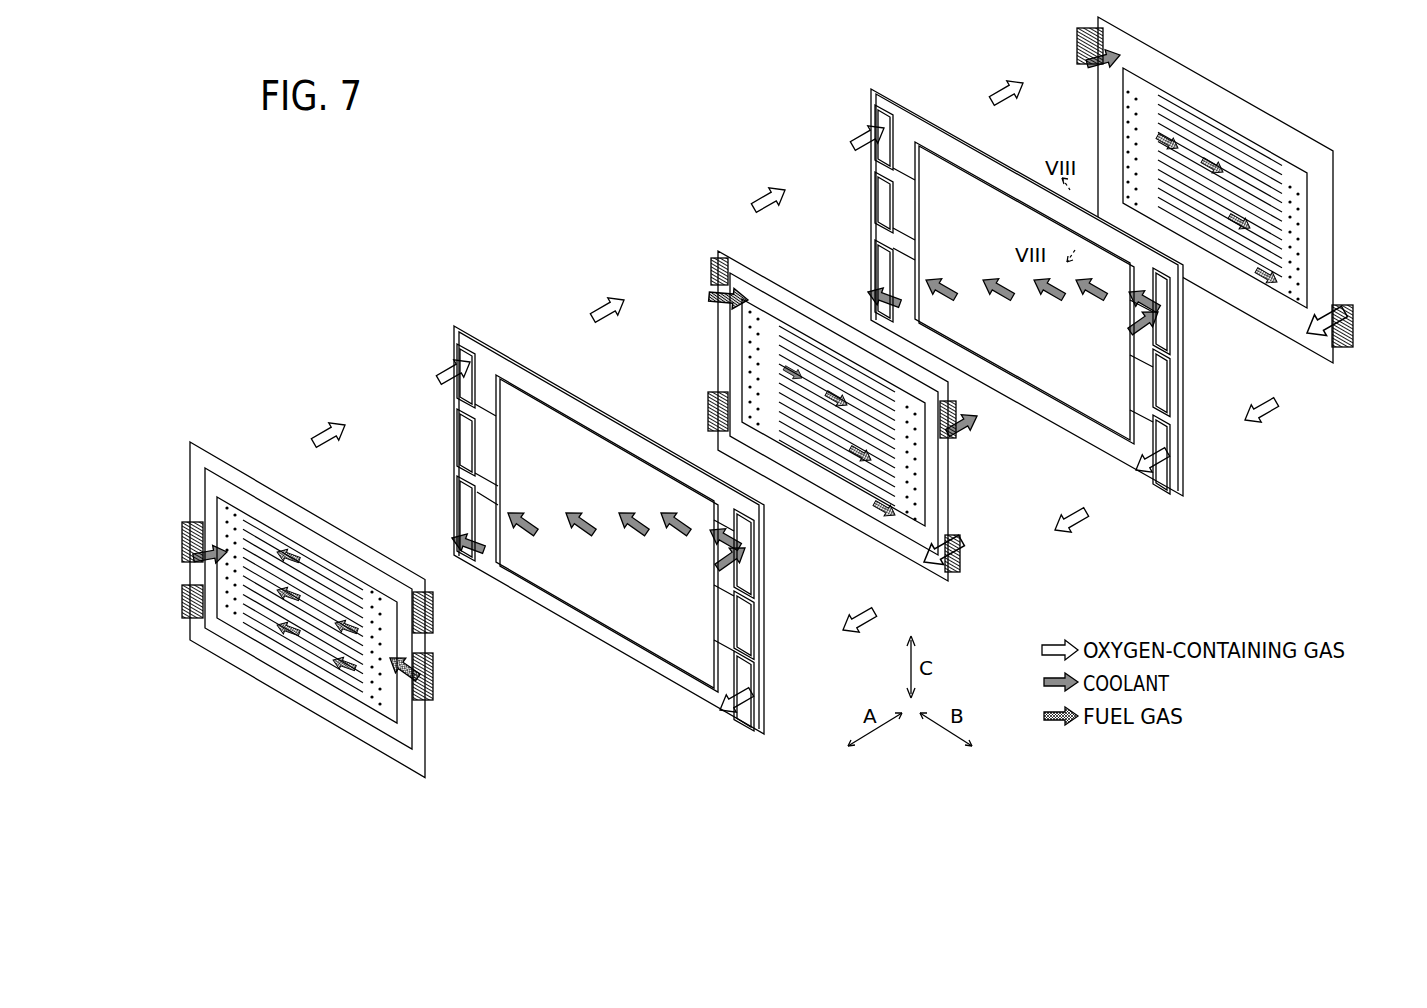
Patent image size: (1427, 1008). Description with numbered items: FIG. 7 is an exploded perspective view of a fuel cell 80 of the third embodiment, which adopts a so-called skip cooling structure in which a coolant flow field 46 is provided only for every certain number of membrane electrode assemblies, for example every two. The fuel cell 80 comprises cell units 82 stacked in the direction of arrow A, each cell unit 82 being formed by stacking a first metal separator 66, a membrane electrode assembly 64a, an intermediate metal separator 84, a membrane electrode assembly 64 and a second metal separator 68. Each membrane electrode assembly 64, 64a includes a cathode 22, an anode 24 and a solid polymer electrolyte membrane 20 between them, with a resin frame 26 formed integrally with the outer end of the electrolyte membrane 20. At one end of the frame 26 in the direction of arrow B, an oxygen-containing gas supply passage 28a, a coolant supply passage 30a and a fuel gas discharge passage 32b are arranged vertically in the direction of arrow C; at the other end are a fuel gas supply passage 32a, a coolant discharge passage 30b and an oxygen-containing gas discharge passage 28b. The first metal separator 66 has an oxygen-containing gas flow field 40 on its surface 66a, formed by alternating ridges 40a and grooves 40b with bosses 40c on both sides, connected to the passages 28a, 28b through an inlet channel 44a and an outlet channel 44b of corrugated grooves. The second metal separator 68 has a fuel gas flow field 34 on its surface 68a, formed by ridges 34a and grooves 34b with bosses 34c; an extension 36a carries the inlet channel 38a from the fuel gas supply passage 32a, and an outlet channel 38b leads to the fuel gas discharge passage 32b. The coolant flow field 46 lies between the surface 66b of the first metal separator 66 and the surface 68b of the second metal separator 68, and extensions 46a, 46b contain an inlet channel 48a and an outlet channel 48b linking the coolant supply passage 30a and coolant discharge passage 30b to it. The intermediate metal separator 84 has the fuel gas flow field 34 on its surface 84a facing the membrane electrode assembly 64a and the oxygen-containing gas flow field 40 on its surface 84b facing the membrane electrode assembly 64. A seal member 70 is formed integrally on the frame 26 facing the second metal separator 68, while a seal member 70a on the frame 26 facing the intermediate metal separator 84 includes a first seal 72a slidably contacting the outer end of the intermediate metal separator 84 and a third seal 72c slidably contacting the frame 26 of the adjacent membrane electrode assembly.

The cell unit 82 is at (502, 95).
The fuel cell 80 is at (543, 95).
The first metal separator 66 is at (1338, 150).
The surface of first metal separator 66a is at (1303, 334).
The surface of first metal separator 66b is at (1306, 348).
The oxygen-containing gas flow field 40 is at (1182, 125).
The ridges 40a is at (1228, 143).
The grooves 40b is at (1263, 170).
The bosses 40c is at (1130, 143).
The inlet channel 44a is at (1068, 35).
The outlet channel 44b is at (1353, 312).
The extension 36a is at (1096, 88).
The inlet channel 38a is at (954, 402).
The outlet channel 38b is at (708, 428).
The membrane electrode assembly 64a is at (866, 85).
The membrane electrode assembly 64 is at (452, 325).
The first seal 72a is at (932, 152).
The third seal 72c is at (977, 158).
The cathode 22 is at (1012, 212).
The oxygen-containing gas supply passage 28a is at (884, 125).
The oxygen-containing gas discharge passage 28b is at (1165, 445).
The coolant supply passage 30a is at (1165, 375).
The coolant discharge passage 30b is at (884, 190).
The fuel gas supply passage 32a is at (1165, 300).
The fuel gas discharge passage 32b is at (884, 255).
The resin frame 26 is at (1180, 340).
The solid polymer electrolyte membrane 20 is at (1180, 350).
The fuel gas flow field 34 is at (925, 342).
The ridges 34a is at (330, 560).
The grooves 34b is at (300, 562).
The bosses 34c is at (202, 481).
The anode 24 is at (1078, 400).
The seal member 70 is at (598, 641).
The seal member 70a is at (1031, 416).
The intermediate metal separator 84 is at (716, 250).
The surface of intermediate metal separator 84a is at (936, 583).
The surface of intermediate metal separator 84b is at (915, 560).
The second metal separator 68 is at (188, 441).
The surface of second metal separator 68a is at (384, 758).
The surface of second metal separator 68b is at (372, 737).
The coolant flow field 46 is at (320, 653).
The extension 46a is at (434, 662).
The extension 46b is at (187, 523).
The inlet channel 48a is at (435, 675).
The outlet channel 48b is at (168, 535).